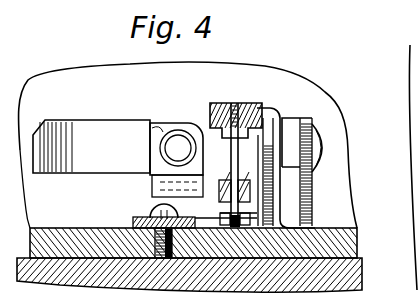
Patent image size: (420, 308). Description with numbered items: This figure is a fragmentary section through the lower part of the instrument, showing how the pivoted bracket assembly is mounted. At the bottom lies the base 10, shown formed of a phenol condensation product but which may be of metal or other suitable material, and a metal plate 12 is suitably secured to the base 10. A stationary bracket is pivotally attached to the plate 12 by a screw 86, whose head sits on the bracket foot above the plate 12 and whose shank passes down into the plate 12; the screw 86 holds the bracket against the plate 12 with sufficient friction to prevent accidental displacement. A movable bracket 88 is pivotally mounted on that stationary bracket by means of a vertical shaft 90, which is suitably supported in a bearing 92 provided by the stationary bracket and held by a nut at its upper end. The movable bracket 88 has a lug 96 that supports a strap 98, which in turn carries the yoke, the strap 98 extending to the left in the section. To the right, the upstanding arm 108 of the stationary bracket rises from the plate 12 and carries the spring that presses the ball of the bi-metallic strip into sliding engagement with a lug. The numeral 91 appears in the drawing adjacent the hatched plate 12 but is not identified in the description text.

The base 10 is at (360, 278).
The metal plate 12 is at (358, 246).
The screw 86 is at (147, 208).
The movable bracket 88 is at (150, 187).
The shaft 90 is at (224, 138).
The foot 91 is at (266, 233).
The bearing 92 is at (243, 104).
The lug 96 is at (156, 126).
The strap 98 is at (112, 151).
The upstanding arm 108 is at (314, 173).